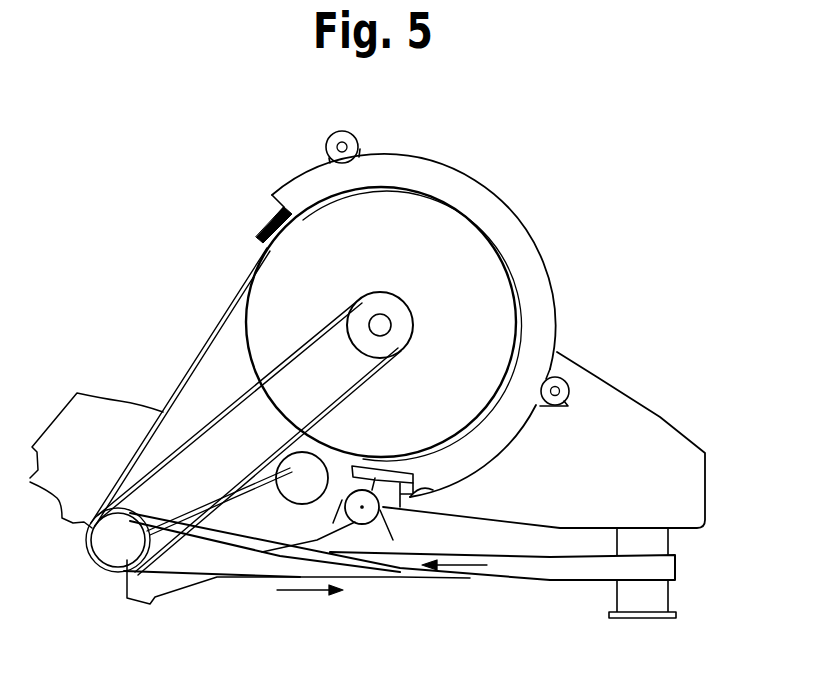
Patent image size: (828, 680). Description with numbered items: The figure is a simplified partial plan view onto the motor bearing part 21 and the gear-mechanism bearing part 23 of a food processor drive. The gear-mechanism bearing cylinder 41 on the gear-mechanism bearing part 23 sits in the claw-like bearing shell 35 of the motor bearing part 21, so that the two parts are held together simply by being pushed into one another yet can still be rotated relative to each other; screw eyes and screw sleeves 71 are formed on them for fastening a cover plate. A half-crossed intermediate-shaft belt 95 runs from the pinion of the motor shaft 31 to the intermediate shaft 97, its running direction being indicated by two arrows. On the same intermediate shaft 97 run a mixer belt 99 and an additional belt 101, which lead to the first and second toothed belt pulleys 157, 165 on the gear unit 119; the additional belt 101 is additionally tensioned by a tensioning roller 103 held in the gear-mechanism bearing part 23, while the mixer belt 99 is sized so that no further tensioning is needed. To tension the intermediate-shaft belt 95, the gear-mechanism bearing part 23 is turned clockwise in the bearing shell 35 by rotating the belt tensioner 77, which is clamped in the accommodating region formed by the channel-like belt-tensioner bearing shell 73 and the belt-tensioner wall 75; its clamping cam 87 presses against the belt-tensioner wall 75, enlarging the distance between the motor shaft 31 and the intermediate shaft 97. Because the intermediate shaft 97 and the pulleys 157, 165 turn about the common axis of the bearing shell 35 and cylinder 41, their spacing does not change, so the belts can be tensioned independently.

The gear-mechanism bearing part 23 is at (216, 212).
The gear-mechanism bearing cylinder 41 is at (507, 222).
The screw eyes and screw sleeves 71 is at (355, 138).
The second toothed belt pulley 165 is at (418, 215).
The gear unit 119 is at (490, 344).
The first toothed belt pulley 157 is at (395, 312).
The motor bearing part 21 is at (663, 418).
The motor shaft 31 is at (657, 597).
The intermediate-shaft belt 95 is at (528, 567).
The belt-tensioner bearing shell 73 is at (338, 525).
The intermediate shaft 97 is at (104, 549).
The additional belt 101 is at (218, 332).
The mixer belt 99 is at (210, 427).
The tensioning roller 103 is at (285, 492).
The belt tensioner 77 is at (367, 533).
The clamping cam 87 is at (383, 515).
The belt-tensioner wall 75 is at (380, 478).
The bearing shell 35 is at (420, 492).